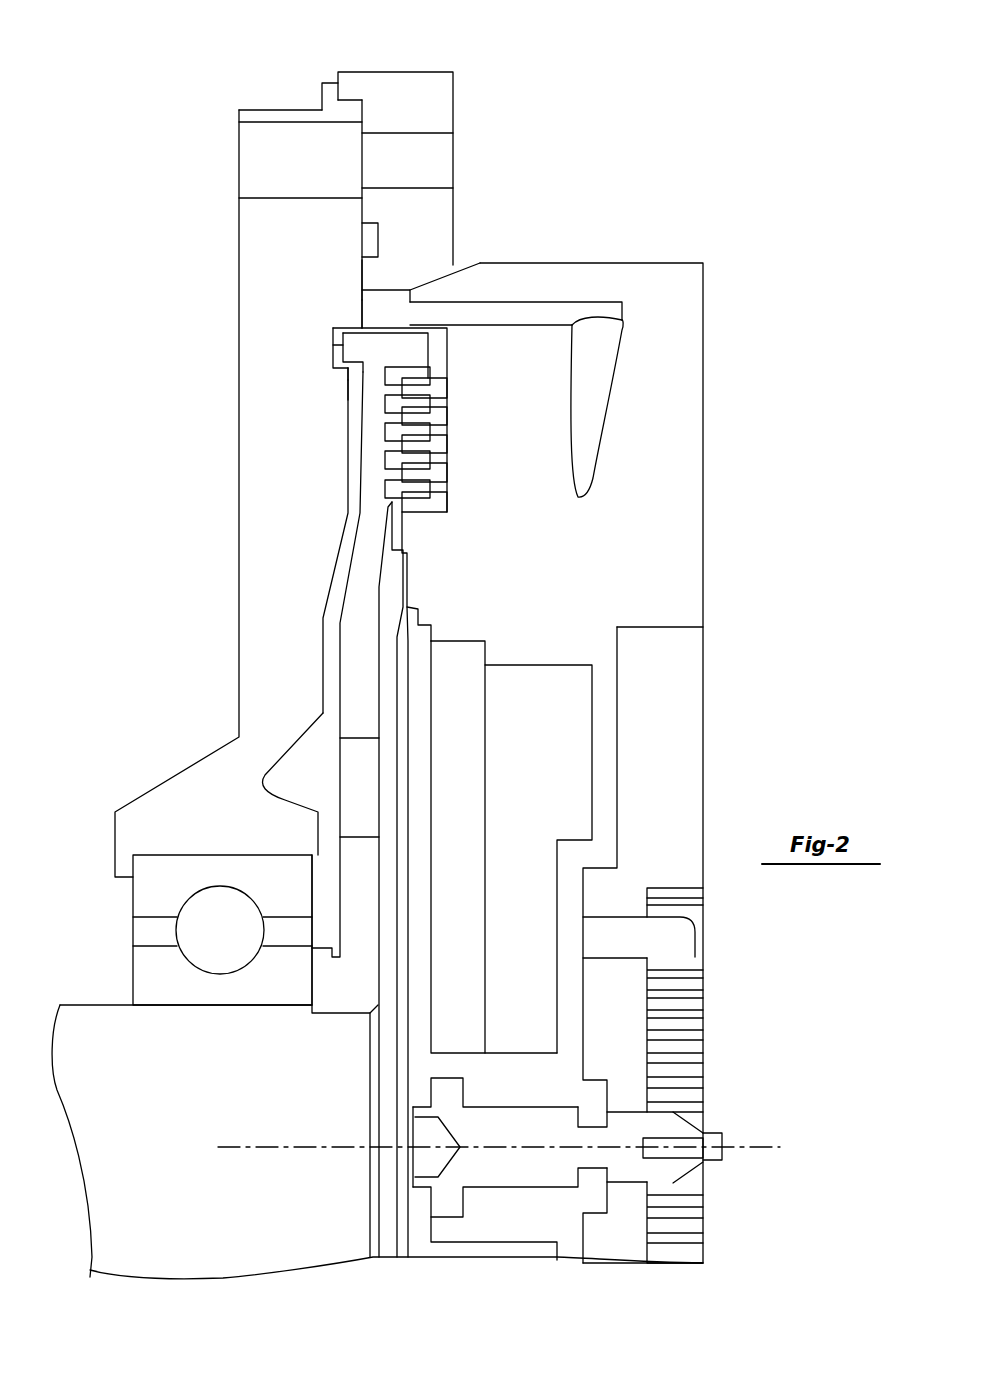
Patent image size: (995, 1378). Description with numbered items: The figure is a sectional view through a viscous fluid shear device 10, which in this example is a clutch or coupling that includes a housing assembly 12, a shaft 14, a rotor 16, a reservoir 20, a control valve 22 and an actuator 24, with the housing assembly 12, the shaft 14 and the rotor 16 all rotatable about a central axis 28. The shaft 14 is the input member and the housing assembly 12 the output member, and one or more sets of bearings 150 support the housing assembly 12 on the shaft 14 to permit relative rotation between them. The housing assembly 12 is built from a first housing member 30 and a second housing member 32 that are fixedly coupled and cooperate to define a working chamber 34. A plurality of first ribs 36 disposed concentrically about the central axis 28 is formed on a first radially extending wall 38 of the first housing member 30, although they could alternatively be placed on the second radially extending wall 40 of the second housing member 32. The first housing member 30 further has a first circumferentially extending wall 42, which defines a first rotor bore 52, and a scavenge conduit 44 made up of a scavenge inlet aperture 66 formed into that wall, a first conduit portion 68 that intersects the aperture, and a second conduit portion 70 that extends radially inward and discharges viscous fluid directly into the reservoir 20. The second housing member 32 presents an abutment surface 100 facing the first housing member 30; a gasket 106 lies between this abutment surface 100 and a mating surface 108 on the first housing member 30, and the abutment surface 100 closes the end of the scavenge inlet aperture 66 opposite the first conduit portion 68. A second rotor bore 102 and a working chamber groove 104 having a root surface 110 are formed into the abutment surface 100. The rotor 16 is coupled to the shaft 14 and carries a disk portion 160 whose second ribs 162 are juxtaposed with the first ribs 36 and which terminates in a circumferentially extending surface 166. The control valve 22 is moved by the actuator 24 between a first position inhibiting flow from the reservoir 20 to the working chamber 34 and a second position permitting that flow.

The viscous fluid shear device 10 is at (647, 113).
The housing assembly 12 is at (216, 3).
The shaft 14 is at (95, 1020).
The rotor 16 is at (362, 865).
The reservoir 20 is at (450, 745).
The control valve 22 is at (537, 1175).
The actuator 24 is at (690, 1022).
The central axis 28 is at (755, 1135).
The first housing member 30 is at (364, 84).
The second housing member 32 is at (328, 107).
The working chamber 34 is at (437, 445).
The first ribs 36 is at (418, 378).
The first radially extending wall 38 is at (680, 545).
The second radially extending wall 40 is at (245, 460).
The first circumferentially extending wall 42 is at (427, 225).
The scavenge conduit 44 is at (410, 290).
The first rotor bore 52 is at (455, 340).
The scavenge inlet aperture 66 is at (372, 312).
The first conduit portion 68 is at (570, 318).
The second conduit portion 70 is at (607, 375).
The abutment surface 100 is at (358, 198).
The second rotor bore 102 is at (338, 345).
The working chamber groove 104 is at (343, 366).
The gasket 106 is at (370, 236).
The mating surface 108 is at (362, 278).
The root surface 110 is at (350, 395).
The bearings 150 is at (152, 890).
The disk portion 160 is at (377, 517).
The second ribs 162 is at (407, 473).
The circumferentially extending surface 166 is at (380, 337).